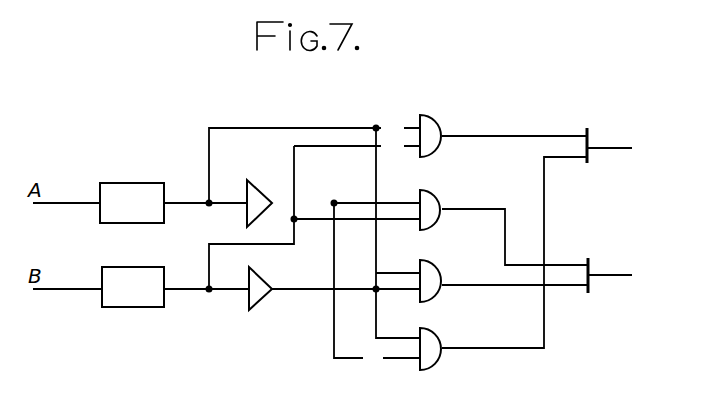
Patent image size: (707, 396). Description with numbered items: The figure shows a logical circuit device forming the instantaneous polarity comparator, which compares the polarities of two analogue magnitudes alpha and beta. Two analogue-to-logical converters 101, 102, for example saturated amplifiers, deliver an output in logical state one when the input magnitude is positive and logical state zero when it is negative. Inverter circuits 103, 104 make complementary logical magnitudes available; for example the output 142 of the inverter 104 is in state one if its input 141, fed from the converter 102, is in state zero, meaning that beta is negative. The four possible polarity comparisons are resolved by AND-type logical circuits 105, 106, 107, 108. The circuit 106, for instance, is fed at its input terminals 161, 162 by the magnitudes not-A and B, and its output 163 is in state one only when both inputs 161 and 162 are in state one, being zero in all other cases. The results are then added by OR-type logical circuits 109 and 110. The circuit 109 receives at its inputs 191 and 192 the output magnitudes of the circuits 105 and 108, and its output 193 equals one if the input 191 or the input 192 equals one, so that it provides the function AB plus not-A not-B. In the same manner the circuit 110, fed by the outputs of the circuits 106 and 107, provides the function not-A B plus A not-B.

The analogue-to-logical converter 101 is at (137, 217).
The analogue-to-logical converter 102 is at (138, 301).
The inverter circuit 103 is at (258, 195).
The inverter circuit 104 is at (262, 295).
The AND logical circuit 105 is at (429, 126).
The AND logical circuit 106 is at (429, 200).
The AND logical circuit 107 is at (429, 267).
The AND logical circuit 108 is at (430, 343).
The OR logical circuit 109 is at (590, 131).
The OR logical circuit 110 is at (590, 259).
The input of inverter 141 is at (243, 293).
The output of inverter 142 is at (274, 293).
The input terminal of AND circuit 161 is at (407, 189).
The input terminal of AND circuit 162 is at (394, 222).
The output of AND circuit 163 is at (455, 210).
The input of OR circuit 191 is at (566, 134).
The input of OR circuit 192 is at (568, 157).
The output of OR circuit 193 is at (623, 147).